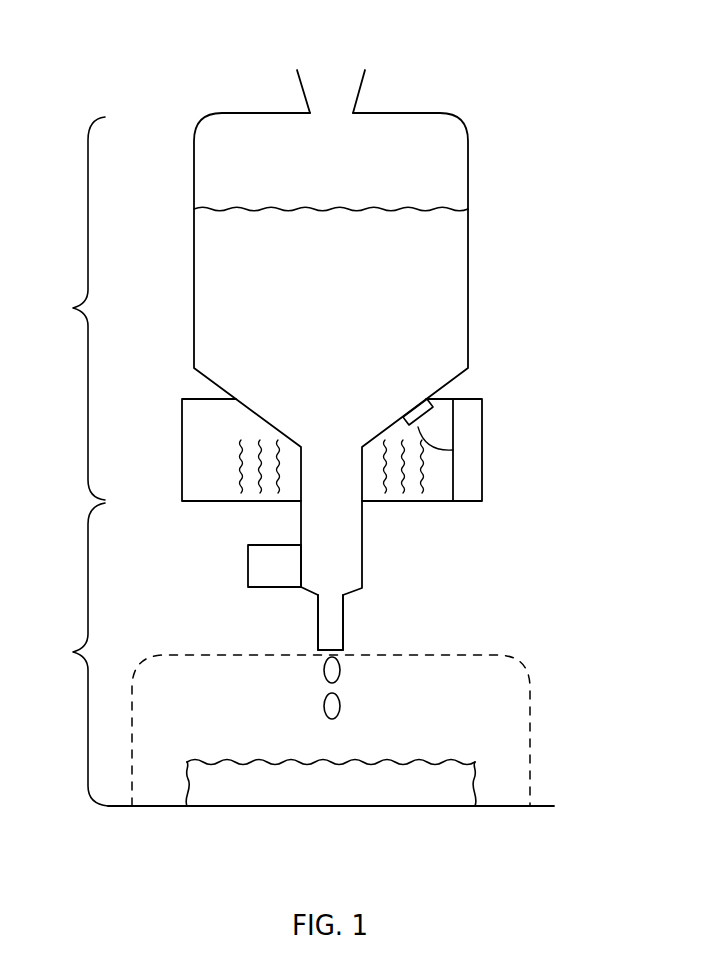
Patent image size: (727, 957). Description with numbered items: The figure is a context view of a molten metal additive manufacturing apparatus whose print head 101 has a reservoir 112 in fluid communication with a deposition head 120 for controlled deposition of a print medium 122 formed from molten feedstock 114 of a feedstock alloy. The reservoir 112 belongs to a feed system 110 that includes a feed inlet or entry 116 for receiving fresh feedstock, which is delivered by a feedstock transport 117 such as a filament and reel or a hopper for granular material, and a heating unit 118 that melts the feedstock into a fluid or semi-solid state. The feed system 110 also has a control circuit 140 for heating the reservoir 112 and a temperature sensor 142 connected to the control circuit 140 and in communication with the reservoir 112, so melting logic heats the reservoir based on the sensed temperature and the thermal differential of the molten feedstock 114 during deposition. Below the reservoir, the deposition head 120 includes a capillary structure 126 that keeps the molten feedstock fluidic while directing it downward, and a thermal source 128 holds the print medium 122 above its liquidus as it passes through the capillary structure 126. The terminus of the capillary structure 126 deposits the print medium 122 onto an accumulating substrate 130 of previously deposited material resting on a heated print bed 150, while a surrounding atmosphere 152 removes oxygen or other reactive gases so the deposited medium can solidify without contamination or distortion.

The print head 101 is at (171, 95).
The feed system 110 is at (69, 308).
The reservoir 112 is at (468, 230).
The molten feedstock 114 is at (347, 260).
The feed inlet 116 is at (318, 84).
The feedstock transport 117 is at (363, 85).
The heating unit 118 is at (417, 502).
The deposition head 120 is at (70, 654).
The print medium 122 is at (345, 692).
The capillary structure 126 is at (343, 630).
The thermal source 128 is at (248, 563).
The accumulating substrate 130 is at (478, 765).
The control circuit 140 is at (482, 458).
The temperature sensor 142 is at (428, 402).
The print bed 150 is at (497, 806).
The atmosphere 152 is at (200, 700).